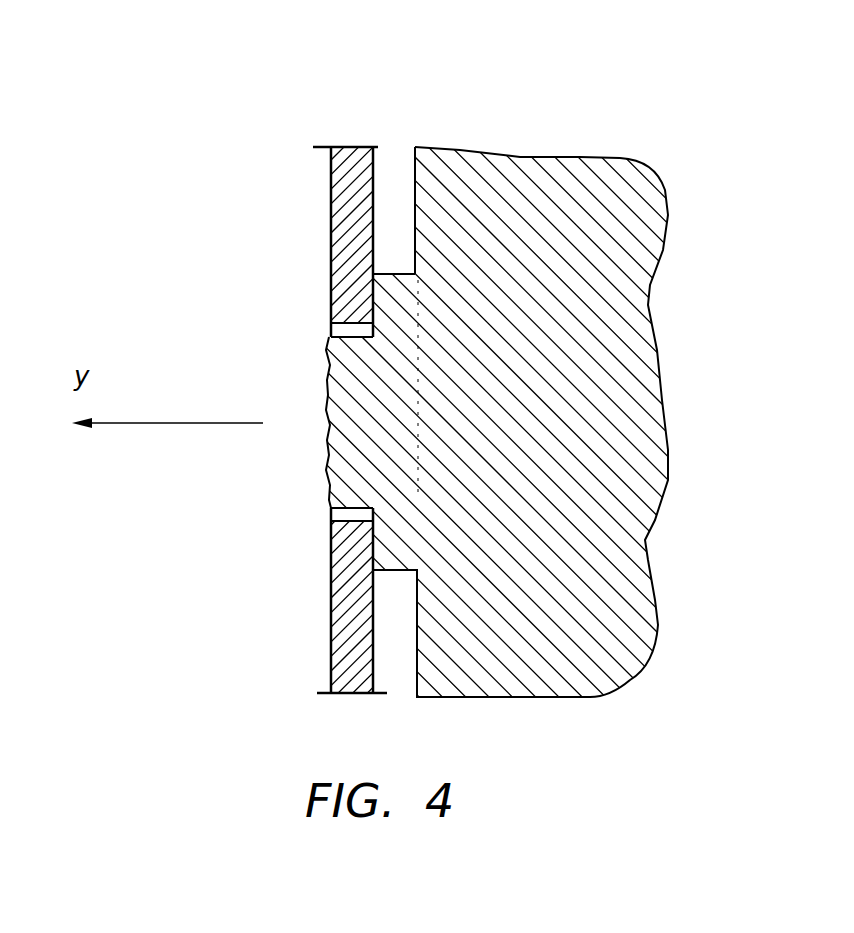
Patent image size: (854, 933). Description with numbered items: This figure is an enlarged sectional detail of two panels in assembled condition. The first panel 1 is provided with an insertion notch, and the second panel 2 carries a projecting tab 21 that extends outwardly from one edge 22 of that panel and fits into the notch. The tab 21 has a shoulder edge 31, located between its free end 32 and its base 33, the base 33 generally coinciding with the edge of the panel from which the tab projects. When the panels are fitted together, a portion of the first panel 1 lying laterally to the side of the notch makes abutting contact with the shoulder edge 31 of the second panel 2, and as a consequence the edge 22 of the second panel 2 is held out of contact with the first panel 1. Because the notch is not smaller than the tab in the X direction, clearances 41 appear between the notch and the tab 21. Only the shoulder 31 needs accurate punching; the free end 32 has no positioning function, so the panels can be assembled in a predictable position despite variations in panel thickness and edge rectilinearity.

The panel 1 is at (352, 650).
The panel 2 is at (628, 659).
The projecting tab 21 is at (383, 426).
The edge 22 is at (405, 167).
The shoulder edge 31 is at (353, 550).
The free end 32 is at (325, 375).
The base 33 is at (519, 157).
The clearance 41 is at (330, 327).